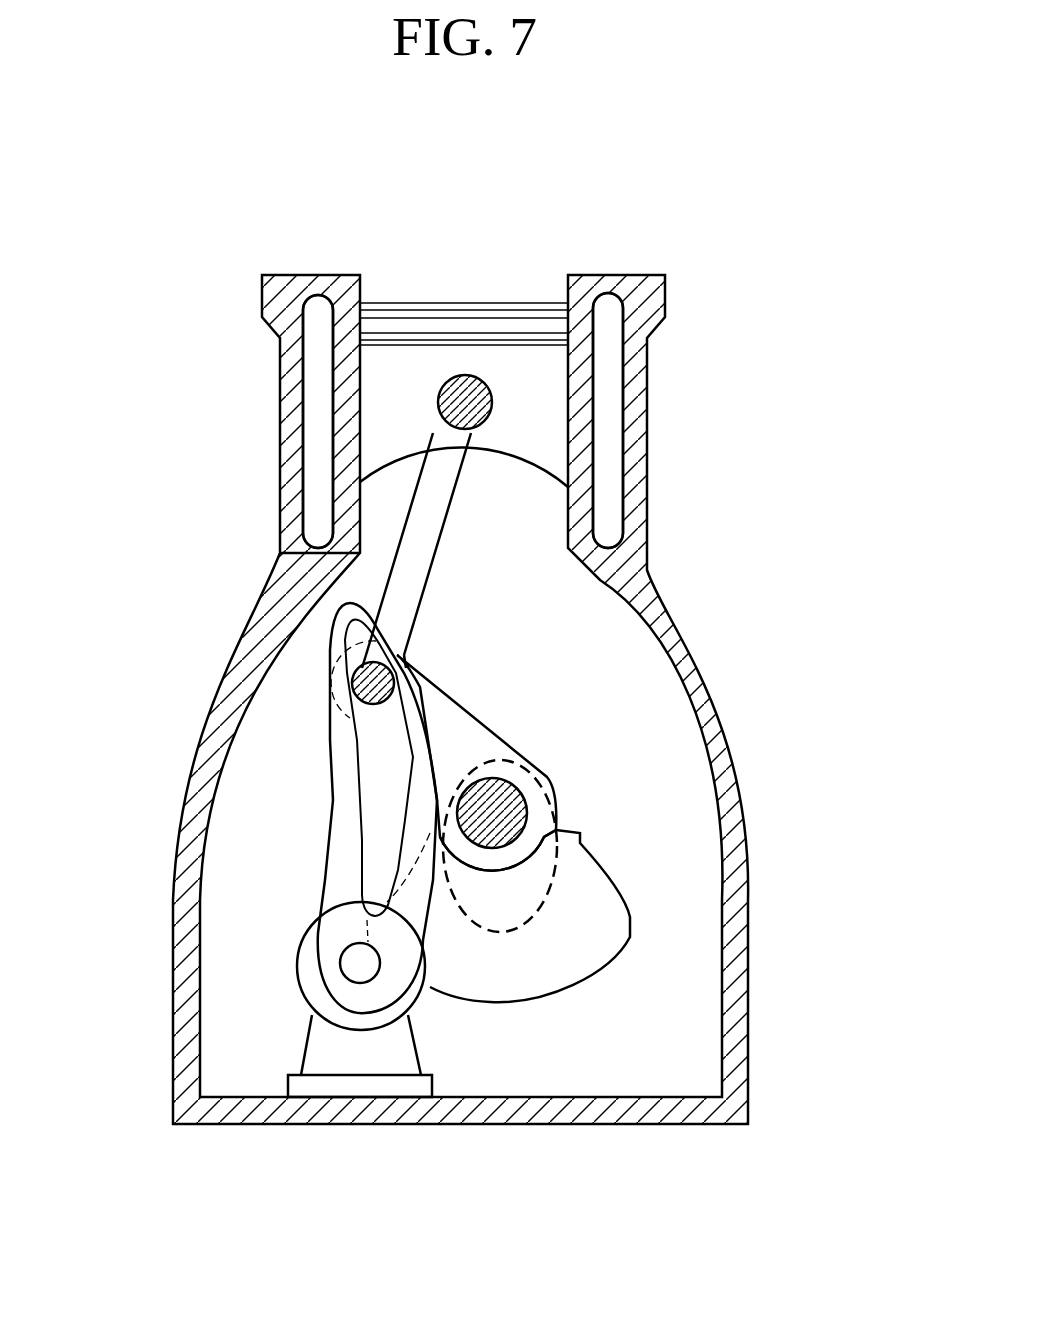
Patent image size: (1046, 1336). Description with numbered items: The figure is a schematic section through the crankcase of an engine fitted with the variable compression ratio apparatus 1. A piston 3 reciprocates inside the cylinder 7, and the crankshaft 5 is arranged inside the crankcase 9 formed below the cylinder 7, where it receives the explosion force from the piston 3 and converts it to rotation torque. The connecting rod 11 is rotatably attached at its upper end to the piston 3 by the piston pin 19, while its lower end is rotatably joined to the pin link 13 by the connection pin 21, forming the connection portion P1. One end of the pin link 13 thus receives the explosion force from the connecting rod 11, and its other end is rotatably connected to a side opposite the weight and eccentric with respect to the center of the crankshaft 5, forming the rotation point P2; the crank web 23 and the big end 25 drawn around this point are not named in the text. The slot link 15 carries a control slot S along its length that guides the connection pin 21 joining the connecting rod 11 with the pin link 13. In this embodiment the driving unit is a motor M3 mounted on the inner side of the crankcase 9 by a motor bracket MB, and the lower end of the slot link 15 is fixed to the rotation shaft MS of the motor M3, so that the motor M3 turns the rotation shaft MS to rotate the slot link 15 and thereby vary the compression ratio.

The variable compression ratio apparatus 1 is at (467, 610).
The piston 3 is at (532, 371).
The crankshaft 5 is at (558, 870).
The cylinder 7 is at (583, 420).
The crankcase 9 is at (721, 736).
The connecting rod 11 is at (415, 532).
The pin link 13 is at (467, 733).
The slot link 15 is at (338, 658).
The piston pin 19 is at (463, 375).
The connection pin 21 is at (335, 640).
The crank web 23 is at (598, 940).
The link rod big end 25 is at (548, 787).
The connection portion P1 is at (398, 681).
The rotation point P2 is at (498, 802).
The control slot S is at (378, 855).
The rotation shaft MS is at (358, 965).
The motor M3 is at (305, 983).
The motor bracket MB is at (397, 1052).